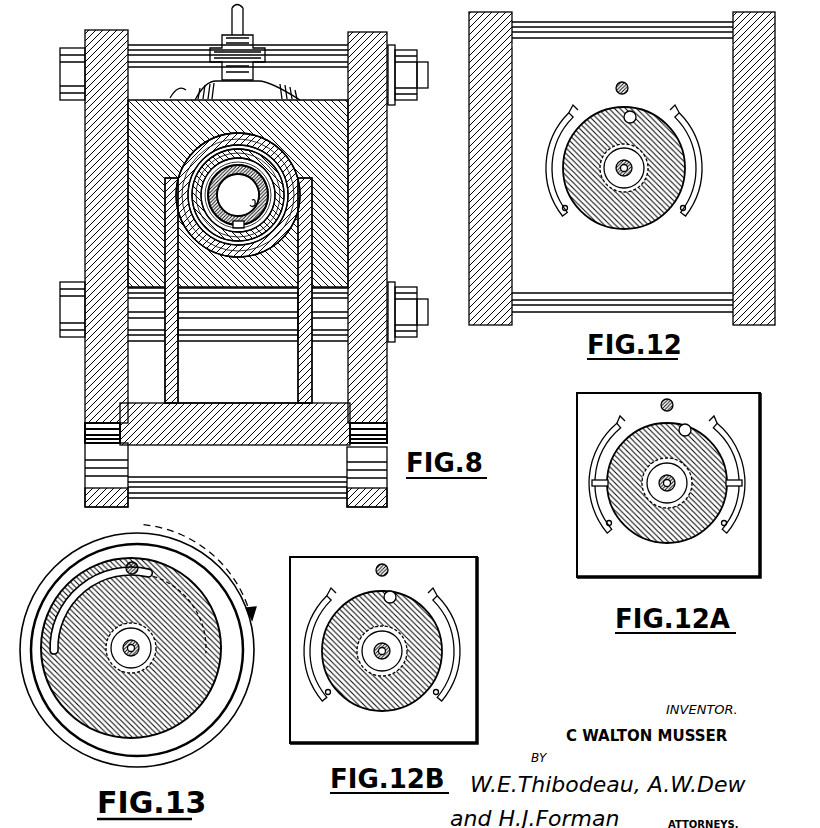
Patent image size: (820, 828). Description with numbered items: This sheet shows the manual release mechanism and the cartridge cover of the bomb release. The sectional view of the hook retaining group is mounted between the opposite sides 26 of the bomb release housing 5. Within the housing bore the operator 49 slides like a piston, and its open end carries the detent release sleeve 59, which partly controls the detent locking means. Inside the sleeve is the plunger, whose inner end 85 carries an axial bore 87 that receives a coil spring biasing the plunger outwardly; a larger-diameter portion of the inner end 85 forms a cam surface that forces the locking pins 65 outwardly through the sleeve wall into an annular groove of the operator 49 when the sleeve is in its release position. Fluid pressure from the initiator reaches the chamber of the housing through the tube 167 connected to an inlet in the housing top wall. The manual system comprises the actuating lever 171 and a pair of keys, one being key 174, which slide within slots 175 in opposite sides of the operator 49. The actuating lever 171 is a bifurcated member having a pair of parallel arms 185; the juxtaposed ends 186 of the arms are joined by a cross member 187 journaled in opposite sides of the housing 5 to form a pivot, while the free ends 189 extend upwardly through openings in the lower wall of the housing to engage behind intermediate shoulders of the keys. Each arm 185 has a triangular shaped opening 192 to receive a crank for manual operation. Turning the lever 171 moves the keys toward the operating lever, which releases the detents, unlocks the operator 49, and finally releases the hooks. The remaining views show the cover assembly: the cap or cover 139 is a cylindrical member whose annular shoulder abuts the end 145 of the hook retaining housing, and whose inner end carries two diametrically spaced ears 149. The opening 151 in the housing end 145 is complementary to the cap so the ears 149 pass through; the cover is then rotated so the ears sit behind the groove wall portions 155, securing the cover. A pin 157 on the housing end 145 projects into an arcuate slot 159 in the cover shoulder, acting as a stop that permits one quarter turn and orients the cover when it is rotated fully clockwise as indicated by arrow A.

In FIG. 8, the bomb release housing 5 is at (80, 115).
In FIG. 12, the bomb release housing 5 is at (462, 25).
In FIG. 8, the sides of the bomb release housing 26 is at (84, 127).
In FIG. 12, the sides of the bomb release housing 26 is at (750, 23).
In FIG. 8, the operator 49 is at (287, 140).
In FIG. 8, the detent release sleeve 59 is at (178, 116).
In FIG. 8, the locking pins 65 is at (180, 230).
In FIG. 8, the inner end of the plunger 85 is at (262, 182).
In FIG. 8, the axial bore of the plunger 87 is at (257, 292).
In FIG. 12, the cap or cover 139 is at (645, 236).
In FIG. 12A, the cap or cover 139 is at (666, 550).
In FIG. 12B, the cap or cover 139 is at (394, 717).
In FIG. 13, the cap or cover 139 is at (58, 725).
In FIG. 12, the end of the hook retaining housing 145 is at (533, 45).
In FIG. 12A, the end of the hook retaining housing 145 is at (752, 383).
In FIG. 12B, the end of the hook retaining housing 145 is at (467, 628).
In FIG. 13, the end of the hook retaining housing 145 is at (207, 722).
In FIG. 12, the ears or lugs 149 is at (558, 142).
In FIG. 12A, the ears or lugs 149 is at (613, 442).
In FIG. 12B, the ears or lugs 149 is at (332, 601).
In FIG. 12, the opening 151 is at (565, 212).
In FIG. 12A, the opening 151 is at (742, 470).
In FIG. 12B, the opening 151 is at (440, 606).
In FIG. 12, the groove wall portions 155 is at (635, 122).
In FIG. 12A, the groove wall portions 155 is at (688, 440).
In FIG. 12B, the groove wall portions 155 is at (391, 606).
In FIG. 12, the pin 157 is at (623, 82).
In FIG. 12A, the pin 157 is at (670, 400).
In FIG. 12B, the pin 157 is at (383, 564).
In FIG. 13, the pin 157 is at (130, 562).
In FIG. 13, the arcuate slot 159 is at (75, 580).
In FIG. 8, the tube 167 is at (246, 22).
In FIG. 8, the actuating lever 171 is at (158, 385).
In FIG. 8, the key 174 is at (165, 194).
In FIG. 8, the slots 175 is at (172, 202).
In FIG. 8, the arms 185 is at (172, 347).
In FIG. 8, the juxtaposed ends of the arms 186 is at (297, 393).
In FIG. 8, the cross member 187 is at (308, 474).
In FIG. 8, the free ends of the arms 189 is at (163, 178).
In FIG. 8, the triangular shaped opening 192 is at (96, 440).
In FIG. 13, the arrow A is at (190, 530).